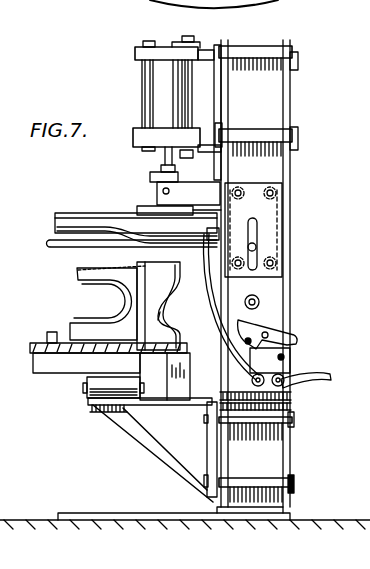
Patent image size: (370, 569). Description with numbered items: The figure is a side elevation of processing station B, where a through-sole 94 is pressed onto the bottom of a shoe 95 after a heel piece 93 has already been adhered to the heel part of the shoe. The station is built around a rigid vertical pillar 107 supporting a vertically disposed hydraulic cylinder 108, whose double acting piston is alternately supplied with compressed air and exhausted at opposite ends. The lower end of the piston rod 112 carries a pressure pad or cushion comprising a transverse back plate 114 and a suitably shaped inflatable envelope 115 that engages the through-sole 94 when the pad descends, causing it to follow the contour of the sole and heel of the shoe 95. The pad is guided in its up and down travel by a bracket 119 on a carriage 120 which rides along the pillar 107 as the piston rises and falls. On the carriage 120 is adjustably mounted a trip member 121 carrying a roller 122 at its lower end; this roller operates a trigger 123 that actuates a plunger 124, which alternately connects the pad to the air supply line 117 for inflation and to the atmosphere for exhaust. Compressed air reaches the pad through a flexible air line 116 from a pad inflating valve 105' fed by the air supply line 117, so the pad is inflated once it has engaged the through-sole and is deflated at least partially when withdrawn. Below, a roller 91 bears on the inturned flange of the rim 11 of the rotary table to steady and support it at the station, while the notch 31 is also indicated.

The rigid vertical pillar 107 is at (258, 92).
The hydraulic cylinder 108 is at (162, 85).
The piston rod 112 is at (163, 155).
The bracket 119 is at (203, 192).
The carriage 120 is at (258, 210).
The trip member 121 is at (250, 282).
The flexible air line 116 is at (257, 253).
The roller 122 is at (259, 302).
The trigger 123 is at (280, 332).
The pad inflating valve 105' is at (291, 367).
The air supply line 117 is at (293, 387).
The plunger 124 is at (250, 357).
The transverse back plate 114 is at (65, 233).
The inflatable envelope 115 is at (78, 247).
The through-sole 94 is at (133, 268).
The heel piece 93 is at (163, 272).
The notch 31 is at (173, 322).
The shoe 95 is at (110, 285).
The rim 11 is at (56, 373).
The roller 91 is at (113, 385).